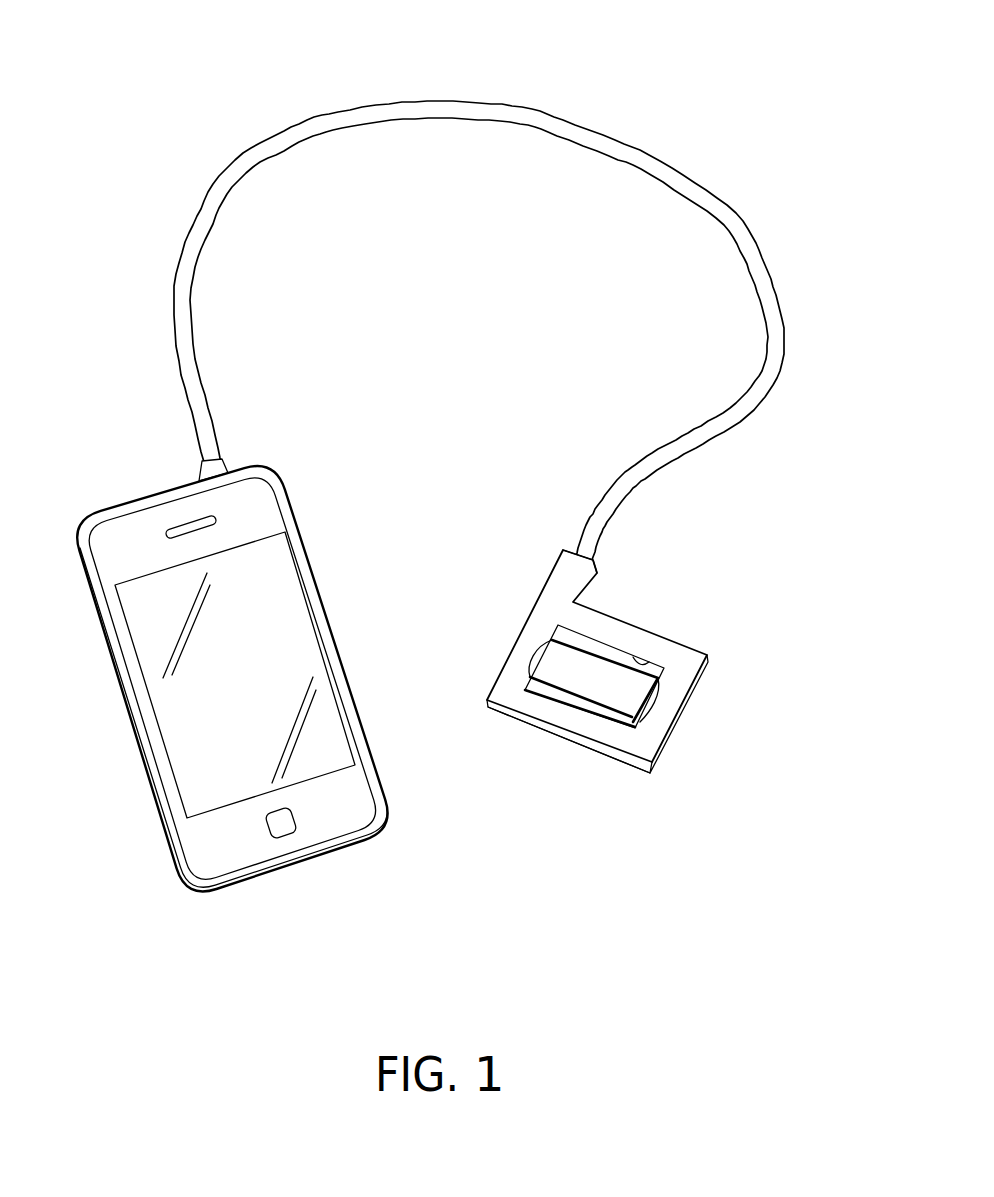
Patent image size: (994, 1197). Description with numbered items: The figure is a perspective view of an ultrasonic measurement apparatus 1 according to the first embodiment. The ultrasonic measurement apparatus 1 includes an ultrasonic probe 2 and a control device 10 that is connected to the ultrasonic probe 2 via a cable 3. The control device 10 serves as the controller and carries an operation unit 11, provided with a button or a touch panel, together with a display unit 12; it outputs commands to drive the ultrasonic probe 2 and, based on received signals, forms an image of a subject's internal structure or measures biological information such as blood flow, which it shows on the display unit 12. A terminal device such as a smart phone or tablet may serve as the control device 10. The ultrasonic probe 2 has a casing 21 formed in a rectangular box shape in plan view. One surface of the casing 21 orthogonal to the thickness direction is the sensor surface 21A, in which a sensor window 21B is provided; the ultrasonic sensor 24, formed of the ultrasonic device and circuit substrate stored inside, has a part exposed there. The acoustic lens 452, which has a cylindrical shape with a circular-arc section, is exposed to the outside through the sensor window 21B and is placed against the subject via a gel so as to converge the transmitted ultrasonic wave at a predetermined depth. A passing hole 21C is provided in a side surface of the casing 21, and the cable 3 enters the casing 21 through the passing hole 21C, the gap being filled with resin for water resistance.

The ultrasonic measurement apparatus 1 is at (614, 62).
The ultrasonic probe 2 is at (621, 646).
The cable 3 is at (467, 120).
The control device 10 is at (232, 664).
The operation unit 11 is at (308, 760).
The display unit 12 is at (290, 611).
The casing 21 is at (621, 649).
The sensor surface 21A is at (641, 746).
The sensor window 21B is at (642, 664).
The passing hole 21C is at (610, 549).
The ultrasonic sensor 24 is at (607, 647).
The acoustic lens 452 is at (547, 660).